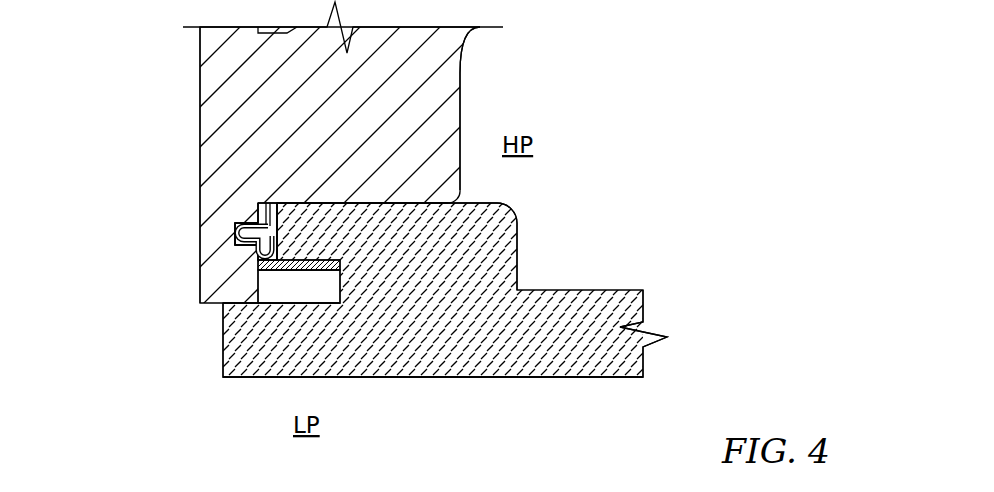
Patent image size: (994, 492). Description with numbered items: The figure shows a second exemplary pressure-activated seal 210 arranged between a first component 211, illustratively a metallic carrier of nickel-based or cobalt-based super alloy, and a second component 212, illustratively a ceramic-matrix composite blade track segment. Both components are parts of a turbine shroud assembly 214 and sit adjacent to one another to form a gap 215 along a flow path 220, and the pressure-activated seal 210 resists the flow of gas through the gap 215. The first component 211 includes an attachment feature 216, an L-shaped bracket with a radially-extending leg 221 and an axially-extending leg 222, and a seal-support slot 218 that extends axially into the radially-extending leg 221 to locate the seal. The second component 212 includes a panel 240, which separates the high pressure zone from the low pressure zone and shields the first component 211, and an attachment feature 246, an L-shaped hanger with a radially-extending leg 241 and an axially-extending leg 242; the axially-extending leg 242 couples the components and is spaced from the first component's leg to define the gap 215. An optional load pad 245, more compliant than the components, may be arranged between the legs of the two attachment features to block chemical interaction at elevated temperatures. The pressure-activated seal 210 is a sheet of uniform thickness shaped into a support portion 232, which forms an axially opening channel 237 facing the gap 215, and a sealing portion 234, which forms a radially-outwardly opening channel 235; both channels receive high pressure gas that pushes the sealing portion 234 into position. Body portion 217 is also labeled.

The pressure-activated seal 210 is at (150, 321).
The first component 211 is at (200, 86).
The second component 212 is at (488, 385).
The turbine shroud assembly 214 is at (614, 95).
The gap 215 is at (268, 233).
The attachment feature 216 is at (200, 192).
The first component body 217 is at (412, 102).
The seal-support slot 218 is at (237, 228).
The flow path 220 is at (464, 197).
The radially-extending leg 221 is at (200, 202).
The axially-extending leg 222 is at (279, 278).
The support portion 232 is at (233, 240).
The sealing portion 234 is at (268, 274).
The radially-outwardly opening channel 235 is at (282, 224).
The axially opening channel 237 is at (265, 222).
The panel 240 is at (367, 355).
The radially-extending leg 241 is at (477, 278).
The axially-extending leg 242 is at (330, 200).
The load pad 245 is at (328, 258).
The attachment feature 246 is at (522, 238).